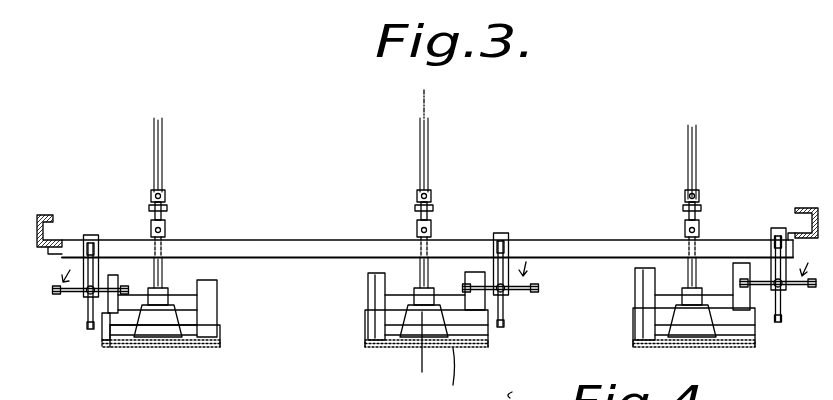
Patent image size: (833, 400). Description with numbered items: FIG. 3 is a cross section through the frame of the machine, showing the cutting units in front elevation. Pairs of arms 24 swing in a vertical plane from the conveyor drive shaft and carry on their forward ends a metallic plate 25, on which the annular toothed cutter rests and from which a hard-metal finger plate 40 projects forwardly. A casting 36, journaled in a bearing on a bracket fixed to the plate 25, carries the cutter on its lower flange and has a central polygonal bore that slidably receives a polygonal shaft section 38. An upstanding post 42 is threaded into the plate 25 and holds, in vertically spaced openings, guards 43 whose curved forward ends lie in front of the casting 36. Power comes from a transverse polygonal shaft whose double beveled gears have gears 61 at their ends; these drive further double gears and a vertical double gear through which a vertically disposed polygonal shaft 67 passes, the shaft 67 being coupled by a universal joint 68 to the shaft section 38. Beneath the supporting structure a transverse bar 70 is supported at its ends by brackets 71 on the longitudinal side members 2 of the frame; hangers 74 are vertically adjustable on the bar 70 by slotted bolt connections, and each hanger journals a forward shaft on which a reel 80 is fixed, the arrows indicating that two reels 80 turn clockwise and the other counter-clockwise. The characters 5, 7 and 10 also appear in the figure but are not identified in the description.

The longitudinal side member 2 is at (38, 215).
The pressing unit 5 is at (517, 390).
The spindle axis 7 is at (424, 235).
The base 10 is at (457, 374).
The arm 24 is at (117, 276).
The metallic plate 25 is at (221, 330).
The casting 36 is at (158, 346).
The polygonal shaft section 38 is at (164, 266).
The finger plate 40 is at (185, 347).
The upstanding post 42 is at (108, 320).
The guard 43 is at (148, 310).
The gear 61 is at (474, 104).
The vertically disposed polygonal shaft 67 is at (151, 139).
The universal joint 68 is at (150, 200).
The transverse bar 70 is at (290, 240).
The bracket 71 is at (63, 240).
The hanger 74 is at (90, 235).
The reel 80 is at (56, 292).